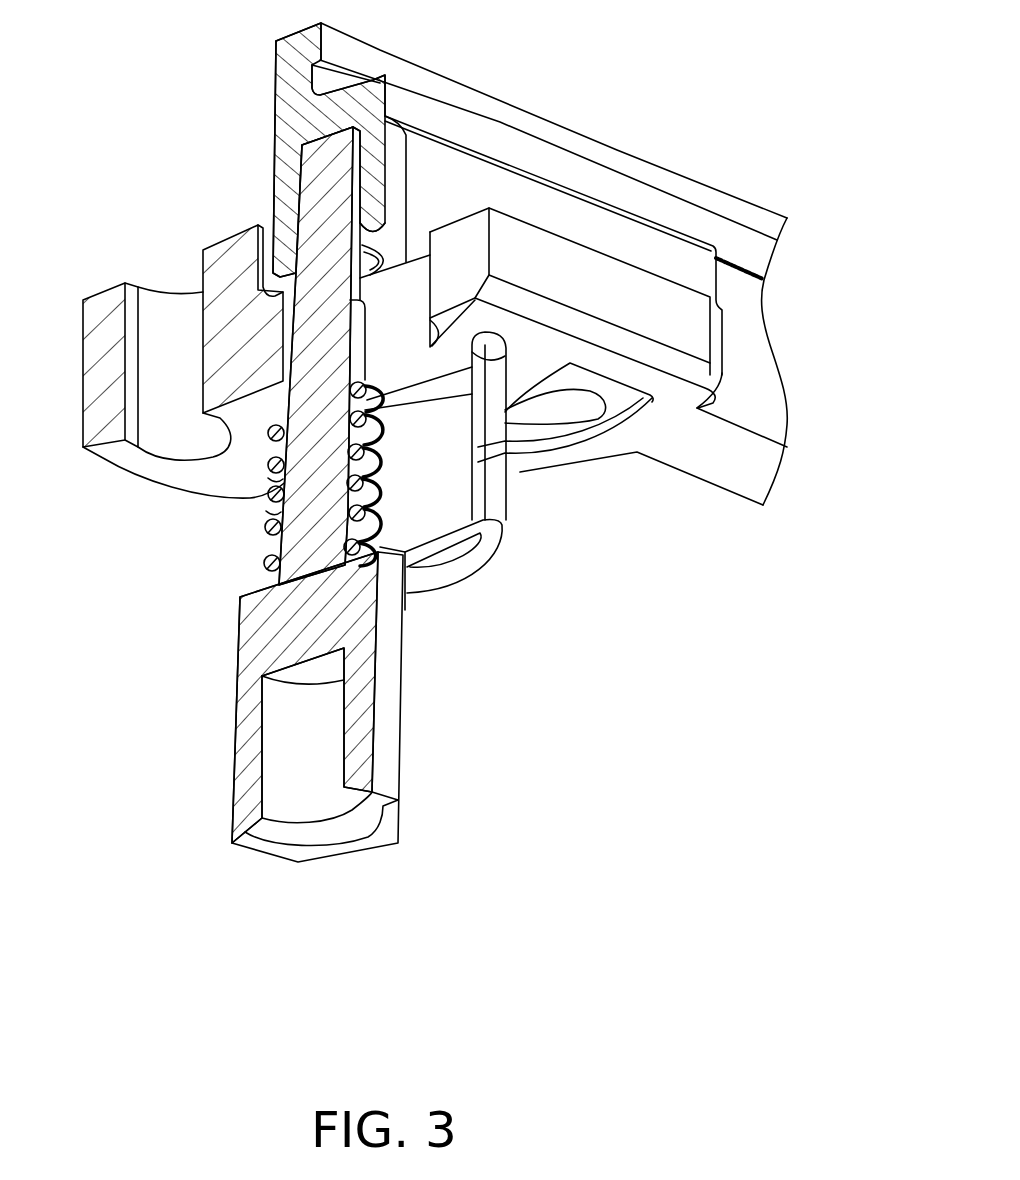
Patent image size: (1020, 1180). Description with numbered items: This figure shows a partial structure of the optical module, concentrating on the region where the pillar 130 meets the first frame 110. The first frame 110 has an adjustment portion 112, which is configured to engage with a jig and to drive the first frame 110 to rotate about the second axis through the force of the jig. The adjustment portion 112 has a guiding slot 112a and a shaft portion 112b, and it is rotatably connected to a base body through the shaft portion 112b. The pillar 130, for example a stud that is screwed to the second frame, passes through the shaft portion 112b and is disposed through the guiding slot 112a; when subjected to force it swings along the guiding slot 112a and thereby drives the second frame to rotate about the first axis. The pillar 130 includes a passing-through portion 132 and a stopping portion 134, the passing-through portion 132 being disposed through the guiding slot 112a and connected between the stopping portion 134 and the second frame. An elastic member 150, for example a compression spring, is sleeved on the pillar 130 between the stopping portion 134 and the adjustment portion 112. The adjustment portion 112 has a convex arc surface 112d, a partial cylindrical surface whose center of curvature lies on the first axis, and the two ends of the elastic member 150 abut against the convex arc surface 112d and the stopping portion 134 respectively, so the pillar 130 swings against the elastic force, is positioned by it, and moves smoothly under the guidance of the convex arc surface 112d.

The first frame 110 is at (730, 477).
The adjustment portion 112 is at (675, 335).
The guiding slot 112a is at (430, 292).
The shaft portion 112b is at (472, 495).
The convex arc surface 112d is at (508, 440).
The pillar 130 is at (291, 442).
The passing-through portion 132 is at (310, 393).
The stopping portion 134 is at (392, 678).
The elastic member 150 is at (267, 526).